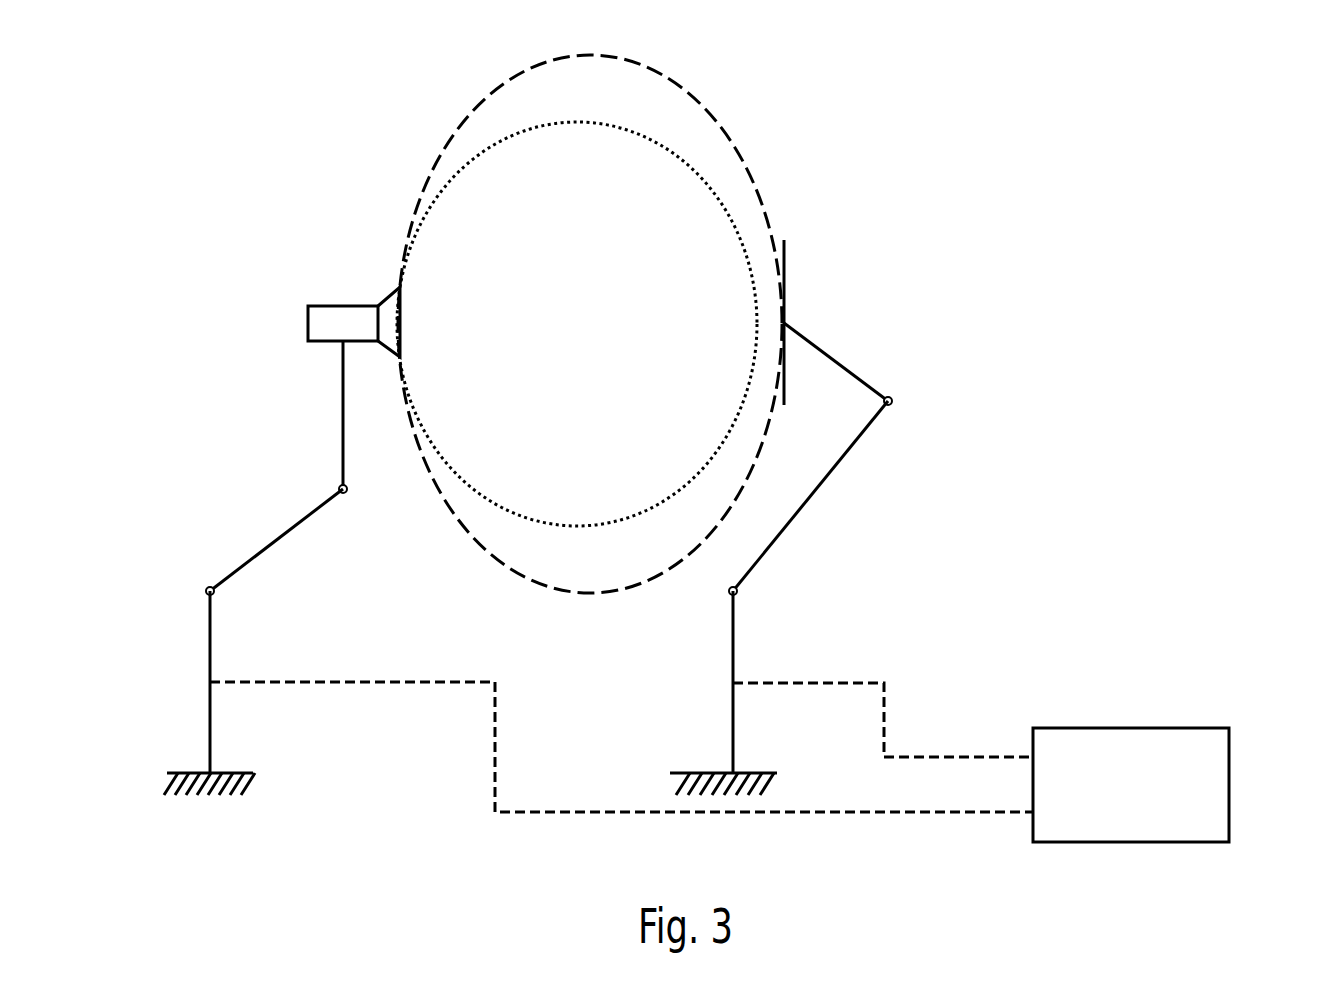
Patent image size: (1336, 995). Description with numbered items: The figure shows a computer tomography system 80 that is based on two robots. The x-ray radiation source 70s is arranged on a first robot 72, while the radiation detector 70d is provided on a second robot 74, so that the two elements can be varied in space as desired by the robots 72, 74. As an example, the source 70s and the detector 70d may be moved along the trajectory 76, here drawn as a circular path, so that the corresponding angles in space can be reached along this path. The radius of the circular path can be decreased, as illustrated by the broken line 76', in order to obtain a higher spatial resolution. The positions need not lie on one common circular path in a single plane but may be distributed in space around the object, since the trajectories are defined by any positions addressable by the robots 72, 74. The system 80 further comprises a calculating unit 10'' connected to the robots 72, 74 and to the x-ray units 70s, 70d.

The computer tomography system 80 is at (1232, 72).
The trajectory 76 is at (590, 321).
The broken line 76' is at (577, 324).
The x-ray radiation source 70s is at (341, 305).
The radiation detector 70d is at (838, 355).
The first robot 72 is at (281, 537).
The second robot 74 is at (814, 497).
The calculating unit 10'' is at (766, 762).